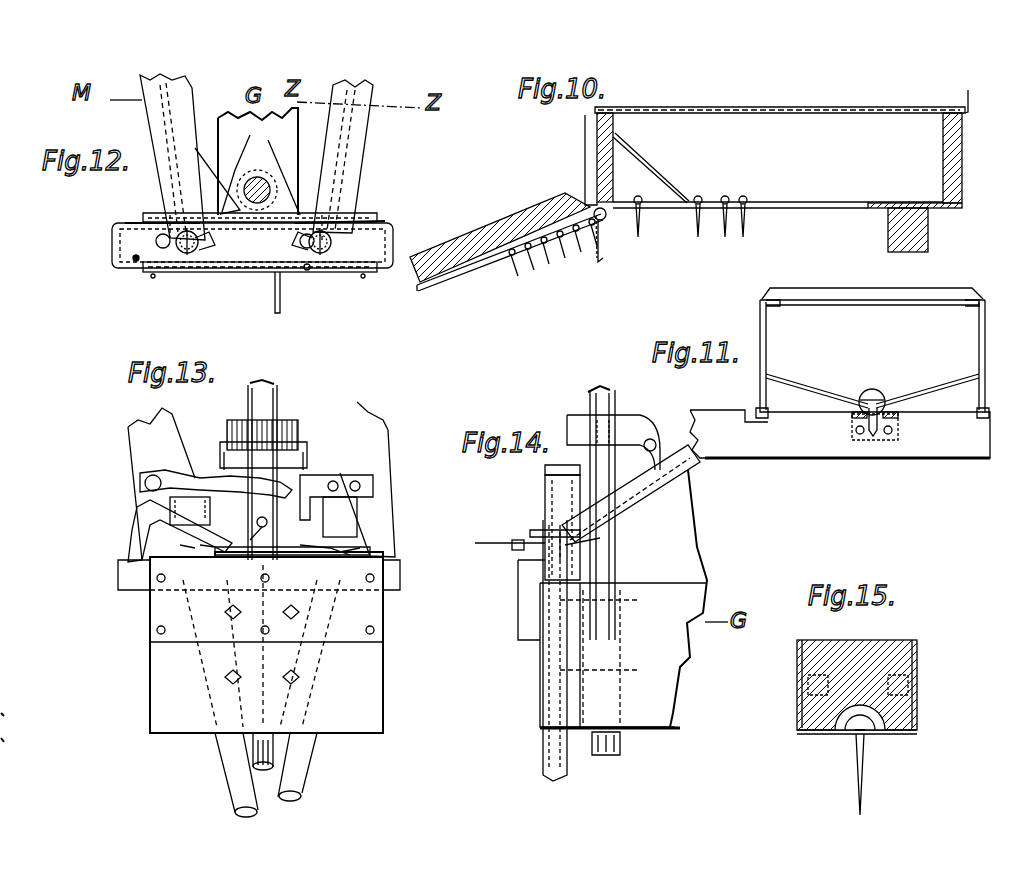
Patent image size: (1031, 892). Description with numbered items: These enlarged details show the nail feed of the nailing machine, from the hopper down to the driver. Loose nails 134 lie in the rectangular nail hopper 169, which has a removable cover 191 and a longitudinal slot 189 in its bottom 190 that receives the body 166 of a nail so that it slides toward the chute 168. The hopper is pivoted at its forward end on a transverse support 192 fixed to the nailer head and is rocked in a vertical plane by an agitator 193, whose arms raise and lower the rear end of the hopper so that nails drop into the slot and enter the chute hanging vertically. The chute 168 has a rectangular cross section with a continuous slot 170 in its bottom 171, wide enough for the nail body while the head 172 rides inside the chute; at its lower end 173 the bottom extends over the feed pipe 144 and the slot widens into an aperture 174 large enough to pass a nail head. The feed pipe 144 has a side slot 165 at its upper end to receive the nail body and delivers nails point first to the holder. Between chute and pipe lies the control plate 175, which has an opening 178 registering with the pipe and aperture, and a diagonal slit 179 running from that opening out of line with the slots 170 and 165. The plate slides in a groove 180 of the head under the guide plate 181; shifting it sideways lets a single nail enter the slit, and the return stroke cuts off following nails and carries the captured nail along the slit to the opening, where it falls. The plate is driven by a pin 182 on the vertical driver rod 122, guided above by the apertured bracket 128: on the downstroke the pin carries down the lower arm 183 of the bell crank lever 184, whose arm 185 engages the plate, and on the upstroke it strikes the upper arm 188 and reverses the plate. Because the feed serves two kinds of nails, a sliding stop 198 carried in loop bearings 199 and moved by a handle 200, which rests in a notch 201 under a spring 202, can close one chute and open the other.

In FIG. 12, the vertical rod 122 is at (260, 231).
In FIG. 14, the vertical rod 122 is at (590, 398).
In FIG. 14, the apertured bracket 128 is at (648, 415).
In FIG. 11, the nail 134 is at (876, 392).
In FIG. 13, the feed pipe 144 is at (257, 816).
In FIG. 14, the feed pipe 144 is at (543, 760).
In FIG. 13, the slot 165 is at (385, 607).
In FIG. 14, the slot 165 is at (560, 580).
In FIG. 10, the body 166 is at (746, 223).
In FIG. 11, the body 166 is at (882, 432).
In FIG. 15, the body 166 is at (866, 762).
In FIG. 10, the chute 168 is at (420, 286).
In FIG. 12, the chute 168 is at (186, 100).
In FIG. 13, the chute 168 is at (135, 440).
In FIG. 14, the chute 168 is at (700, 470).
In FIG. 15, the chute 168 is at (880, 650).
In FIG. 10, the nail hopper 169 is at (773, 159).
In FIG. 11, the nail hopper 169 is at (984, 352).
In FIG. 11, the slot 170 is at (871, 440).
In FIG. 12, the slot 170 is at (162, 190).
In FIG. 15, the slot 170 is at (852, 738).
In FIG. 10, the bottom 171 is at (488, 268).
In FIG. 11, the bottom 171 is at (900, 420).
In FIG. 15, the bottom 171 is at (808, 736).
In FIG. 15, the head 172 is at (865, 728).
In FIG. 12, the lower end 173 is at (331, 235).
In FIG. 13, the lower end 173 is at (350, 560).
In FIG. 14, the lower end 173 is at (535, 530).
In FIG. 12, the aperture 174 is at (335, 240).
In FIG. 12, the plate 175 is at (112, 240).
In FIG. 13, the plate 175 is at (400, 578).
In FIG. 12, the opening 178 is at (158, 245).
In FIG. 12, the diagonal slit 179 is at (180, 223).
In FIG. 14, the groove 180 is at (565, 580).
In FIG. 13, the guide plate 181 is at (150, 618).
In FIG. 14, the guide plate 181 is at (518, 568).
In FIG. 13, the pin 182 is at (270, 525).
In FIG. 14, the pin 182 is at (545, 520).
In FIG. 13, the lower arm 183 is at (272, 550).
In FIG. 13, the bell crank lever 184 is at (140, 492).
In FIG. 13, the arm 185 is at (137, 543).
In FIG. 13, the upper arm 188 is at (330, 478).
In FIG. 14, the upper arm 188 is at (556, 462).
In FIG. 10, the longitudinal slot 189 is at (825, 209).
In FIG. 11, the longitudinal slot 189 is at (862, 398).
In FIG. 10, the bottom 190 is at (867, 210).
In FIG. 11, the bottom 190 is at (952, 382).
In FIG. 10, the removable cover 191 is at (701, 107).
In FIG. 11, the removable cover 191 is at (975, 294).
In FIG. 10, the transverse support 192 is at (600, 264).
In FIG. 11, the transverse support 192 is at (840, 434).
In FIG. 10, the agitator 193 is at (929, 232).
In FIG. 12, the sliding stop 198 is at (282, 171).
In FIG. 13, the sliding stop 198 is at (320, 555).
In FIG. 12, the loop bearings 199 is at (195, 148).
In FIG. 14, the loop bearings 199 is at (600, 538).
In FIG. 12, the handle 200 is at (283, 296).
In FIG. 13, the notch 201 is at (300, 668).
In FIG. 14, the notch 201 is at (495, 527).
In FIG. 13, the spring 202 is at (190, 511).